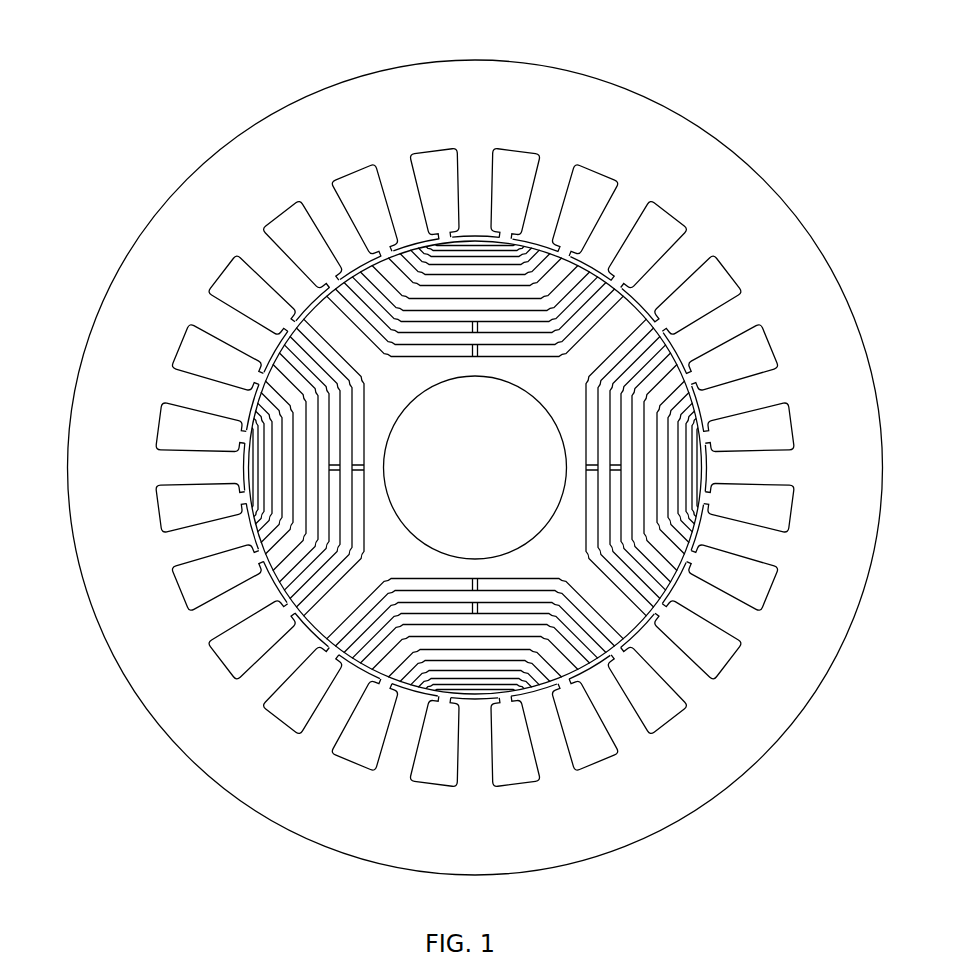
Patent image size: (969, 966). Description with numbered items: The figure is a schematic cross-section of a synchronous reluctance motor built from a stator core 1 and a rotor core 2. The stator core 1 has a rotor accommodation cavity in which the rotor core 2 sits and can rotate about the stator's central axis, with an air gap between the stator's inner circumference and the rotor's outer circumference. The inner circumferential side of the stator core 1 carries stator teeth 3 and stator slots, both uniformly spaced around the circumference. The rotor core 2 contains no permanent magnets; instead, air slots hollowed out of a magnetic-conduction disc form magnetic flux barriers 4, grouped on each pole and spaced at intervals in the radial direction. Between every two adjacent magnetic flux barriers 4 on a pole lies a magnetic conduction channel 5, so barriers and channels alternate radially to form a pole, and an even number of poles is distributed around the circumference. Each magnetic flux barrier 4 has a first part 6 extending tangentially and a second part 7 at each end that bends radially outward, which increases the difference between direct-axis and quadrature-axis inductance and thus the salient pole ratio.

The stator core 1 is at (277, 172).
The rotor core 2 is at (387, 555).
The stator teeth 3 is at (235, 332).
The magnetic flux barriers 4 is at (260, 543).
The magnetic conduction channel 5 is at (300, 563).
The first part 6 is at (464, 287).
The second part 7 is at (400, 255).